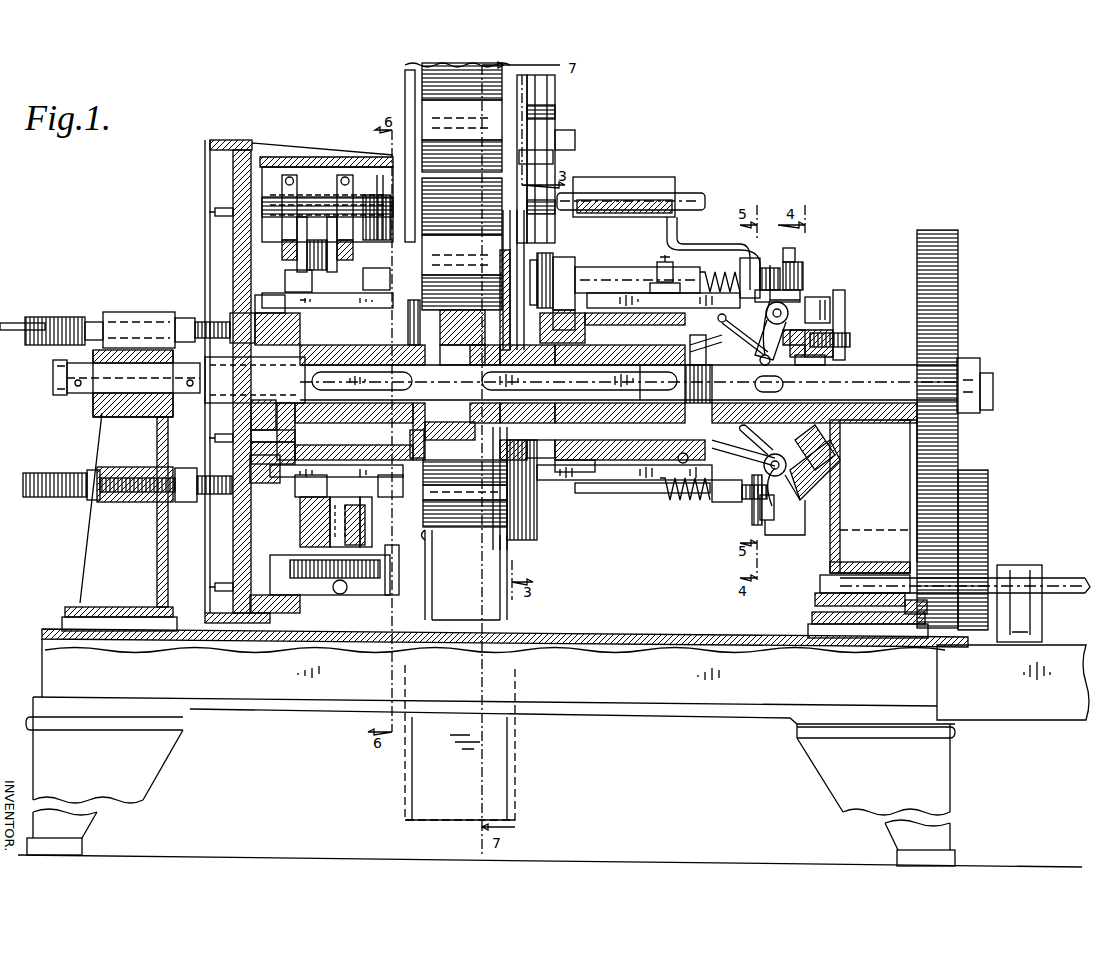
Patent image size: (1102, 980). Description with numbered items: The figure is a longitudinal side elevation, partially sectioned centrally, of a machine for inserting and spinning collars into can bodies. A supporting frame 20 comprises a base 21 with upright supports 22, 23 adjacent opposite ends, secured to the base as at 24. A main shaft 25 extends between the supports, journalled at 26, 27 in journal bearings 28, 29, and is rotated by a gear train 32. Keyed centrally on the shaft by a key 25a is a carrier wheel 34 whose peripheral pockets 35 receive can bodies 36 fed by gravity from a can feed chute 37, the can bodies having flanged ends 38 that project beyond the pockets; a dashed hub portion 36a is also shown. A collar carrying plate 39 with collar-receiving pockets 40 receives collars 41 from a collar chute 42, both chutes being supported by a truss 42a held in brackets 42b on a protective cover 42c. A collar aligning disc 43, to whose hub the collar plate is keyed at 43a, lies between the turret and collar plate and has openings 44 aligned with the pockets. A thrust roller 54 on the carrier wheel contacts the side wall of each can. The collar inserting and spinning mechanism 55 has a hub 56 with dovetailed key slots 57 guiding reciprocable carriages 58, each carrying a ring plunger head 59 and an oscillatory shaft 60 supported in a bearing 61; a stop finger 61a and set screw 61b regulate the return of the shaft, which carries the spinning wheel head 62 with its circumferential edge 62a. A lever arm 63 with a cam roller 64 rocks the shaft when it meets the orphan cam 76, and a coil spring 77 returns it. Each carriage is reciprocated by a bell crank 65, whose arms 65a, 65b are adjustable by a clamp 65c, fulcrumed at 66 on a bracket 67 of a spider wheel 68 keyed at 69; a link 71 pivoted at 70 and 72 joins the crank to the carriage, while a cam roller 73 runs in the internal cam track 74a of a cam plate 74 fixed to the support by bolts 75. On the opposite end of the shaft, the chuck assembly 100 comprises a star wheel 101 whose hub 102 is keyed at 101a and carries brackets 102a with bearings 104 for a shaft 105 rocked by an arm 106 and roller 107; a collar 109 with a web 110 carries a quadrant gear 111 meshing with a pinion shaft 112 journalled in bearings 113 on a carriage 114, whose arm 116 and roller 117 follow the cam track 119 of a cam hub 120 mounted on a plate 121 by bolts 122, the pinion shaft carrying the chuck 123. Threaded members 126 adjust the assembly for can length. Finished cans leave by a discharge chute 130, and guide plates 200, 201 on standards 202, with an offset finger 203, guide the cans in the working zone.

The supporting frame 20 is at (244, 713).
The base 21 is at (235, 681).
The upright support 22 is at (95, 558).
The upright support 23 is at (882, 556).
The securing means 24 is at (70, 617).
The main shaft 25 is at (53, 379).
The key 25a is at (660, 380).
The journal 26 is at (133, 378).
The journal 27 is at (628, 382).
The journal bearing 28 is at (117, 415).
The journal bearing 29 is at (897, 422).
The gear train 32 is at (987, 483).
The carrier wheel 34 is at (485, 348).
The pocket 35 is at (452, 462).
The can body 36 is at (464, 302).
The gear hub 36a is at (575, 140).
The can feed chute 37 is at (412, 86).
The flanged end 38 is at (545, 102).
The collar carrying plate 39 is at (552, 438).
The collar-receiving pocket 40 is at (537, 323).
The collar 41 is at (553, 160).
The collar chute 42 is at (542, 120).
The truss 42a is at (567, 197).
The bracket 42b is at (643, 182).
The protective cover 42c is at (705, 250).
The collar aligning disc 43 is at (495, 380).
The key 43a is at (527, 384).
The opening 44 is at (500, 228).
The thrust roller 54 is at (496, 462).
The collar inserting and spinning mechanism 55 is at (533, 520).
The hub 56 is at (627, 366).
The key slot 57 is at (682, 345).
The carriage 58 is at (627, 513).
The ring plunger head 59 is at (577, 278).
The oscillatory shaft 60 is at (613, 290).
The bearing 61 is at (753, 280).
The stop finger 61a is at (657, 283).
The set screw 61b is at (665, 260).
The spinning wheel head 62 is at (565, 278).
The circumferential edge 62a is at (545, 270).
The lever arm 63 is at (788, 262).
The cam roller 64 is at (803, 265).
The bell crank 65 is at (787, 303).
The arm 65a is at (840, 328).
The arm 65b is at (800, 300).
The clamp 65c is at (820, 332).
The fulcrum 66 is at (770, 300).
The bracket 67 is at (810, 363).
The spider wheel 68 is at (757, 384).
The key 69 is at (780, 373).
The pivot 70 is at (745, 437).
The link 71 is at (703, 448).
The pivot 72 is at (718, 318).
The cam roller 73 is at (838, 308).
The cam plate 74 is at (820, 473).
The internal cam track 74a is at (827, 312).
The bolt 75 is at (850, 342).
The orphan cam 76 is at (765, 517).
The coil spring 77 is at (710, 275).
The chuck assembly 100 is at (312, 170).
The star wheel 101 is at (400, 352).
The key 101a is at (408, 388).
The hub 102 is at (350, 353).
The bracket 102a is at (380, 230).
The bearing 104 is at (393, 583).
The shaft 105 is at (278, 172).
The arm 106 is at (282, 205).
The roller 107 is at (270, 612).
The collar 109 is at (340, 172).
The web 110 is at (282, 238).
The quadrant gear 111 is at (372, 523).
The pinion shaft 112 is at (312, 250).
The bearing 113 is at (344, 382).
The carriage 114 is at (332, 385).
The arm 116 is at (262, 300).
The roller 117 is at (247, 317).
The cam track 119 is at (258, 382).
The cam hub 120 is at (263, 412).
The plate 121 is at (238, 228).
The bolt 122 is at (215, 210).
The chuck 123 is at (412, 302).
The threaded member 126 is at (48, 317).
The discharge chute 130 is at (503, 764).
The guide plate 200 is at (432, 568).
The guide plate 201 is at (510, 572).
The standard 202 is at (432, 608).
The offset finger 203 is at (430, 535).